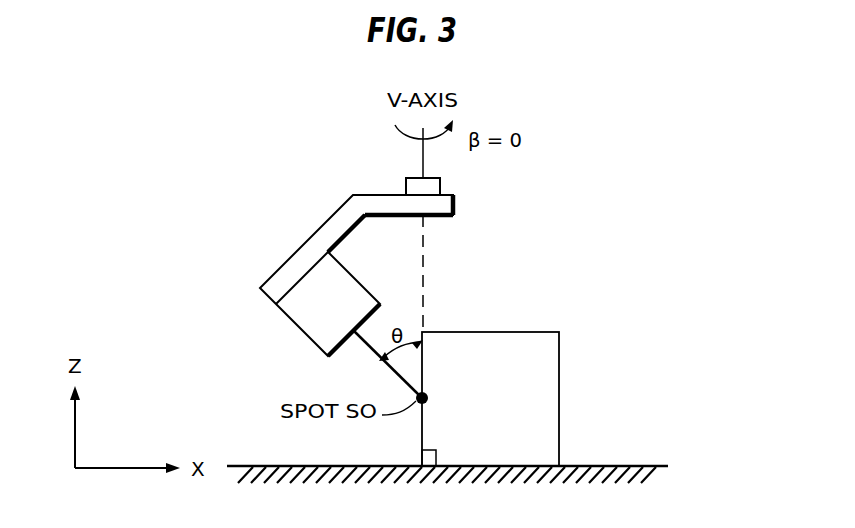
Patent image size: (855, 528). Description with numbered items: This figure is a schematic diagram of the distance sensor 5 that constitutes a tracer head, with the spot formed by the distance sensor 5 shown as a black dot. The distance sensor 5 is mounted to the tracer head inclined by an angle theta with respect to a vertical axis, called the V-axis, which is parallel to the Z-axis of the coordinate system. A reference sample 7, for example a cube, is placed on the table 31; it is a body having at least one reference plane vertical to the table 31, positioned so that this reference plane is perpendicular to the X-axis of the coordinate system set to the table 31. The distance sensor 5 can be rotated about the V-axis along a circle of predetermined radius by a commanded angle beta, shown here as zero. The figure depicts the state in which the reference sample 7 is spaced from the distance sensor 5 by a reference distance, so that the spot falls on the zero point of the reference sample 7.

The distance sensor 5 is at (296, 252).
The reference sample 7 is at (559, 368).
The table 31 is at (582, 466).